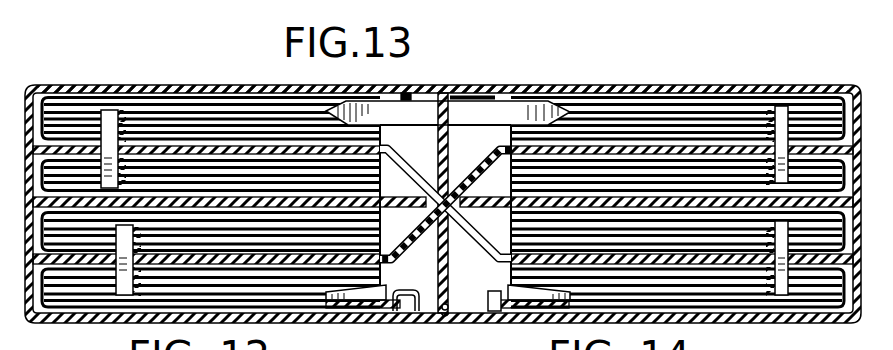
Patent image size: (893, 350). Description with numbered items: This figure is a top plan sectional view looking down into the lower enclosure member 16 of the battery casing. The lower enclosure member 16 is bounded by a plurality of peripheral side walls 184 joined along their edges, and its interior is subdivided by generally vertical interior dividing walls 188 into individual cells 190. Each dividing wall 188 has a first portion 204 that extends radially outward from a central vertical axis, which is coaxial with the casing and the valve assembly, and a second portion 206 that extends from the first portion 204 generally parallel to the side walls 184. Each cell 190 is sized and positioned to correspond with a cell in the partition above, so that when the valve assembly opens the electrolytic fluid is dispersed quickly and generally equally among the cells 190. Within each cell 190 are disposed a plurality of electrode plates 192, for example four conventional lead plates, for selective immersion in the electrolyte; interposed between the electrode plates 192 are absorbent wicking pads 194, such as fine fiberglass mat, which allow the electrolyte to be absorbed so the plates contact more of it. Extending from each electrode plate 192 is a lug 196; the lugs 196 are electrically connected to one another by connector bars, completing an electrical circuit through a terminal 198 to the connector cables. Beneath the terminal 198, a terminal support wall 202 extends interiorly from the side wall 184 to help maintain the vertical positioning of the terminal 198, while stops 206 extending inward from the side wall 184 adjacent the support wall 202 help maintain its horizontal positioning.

The lower enclosure member 16 is at (78, 77).
The side walls 184 is at (177, 77).
The second portion of dividing wall 206 is at (223, 140).
The first portion of dividing wall 204 is at (397, 176).
The dividing walls 188 is at (479, 144).
The lug 196 is at (443, 307).
The terminal 198 is at (403, 305).
The terminal support wall 202 is at (440, 308).
The cells 190 is at (447, 312).
The electrode plates 192 is at (345, 296).
The pads 194 is at (117, 287).